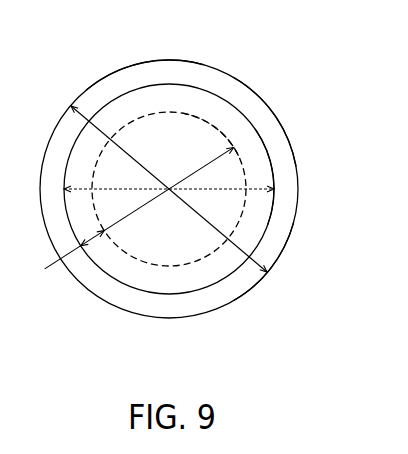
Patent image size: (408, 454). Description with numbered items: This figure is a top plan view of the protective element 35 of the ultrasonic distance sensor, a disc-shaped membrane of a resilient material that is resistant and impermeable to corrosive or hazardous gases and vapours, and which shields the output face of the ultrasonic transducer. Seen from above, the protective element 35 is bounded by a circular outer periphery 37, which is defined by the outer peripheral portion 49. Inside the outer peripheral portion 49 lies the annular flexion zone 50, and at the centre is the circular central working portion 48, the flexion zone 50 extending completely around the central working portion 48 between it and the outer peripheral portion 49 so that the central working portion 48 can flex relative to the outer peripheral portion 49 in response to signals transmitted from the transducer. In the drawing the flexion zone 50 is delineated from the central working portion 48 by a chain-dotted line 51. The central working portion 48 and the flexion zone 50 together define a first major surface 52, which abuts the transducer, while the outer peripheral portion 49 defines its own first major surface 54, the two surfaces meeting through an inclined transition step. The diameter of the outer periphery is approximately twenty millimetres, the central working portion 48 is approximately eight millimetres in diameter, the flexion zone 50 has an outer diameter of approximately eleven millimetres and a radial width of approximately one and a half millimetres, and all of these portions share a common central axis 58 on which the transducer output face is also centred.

The protective element 35 is at (269, 123).
The circular outer periphery 37 is at (279, 268).
The central working portion 48 is at (160, 258).
The outer peripheral portion 49 is at (211, 300).
The annular flexion zone 50 is at (167, 293).
The chain-dotted line 51 is at (268, 173).
The first major surface 52 is at (214, 130).
The first major surface of the outer peripheral portion 54 is at (148, 70).
The common central axis 58 is at (170, 167).